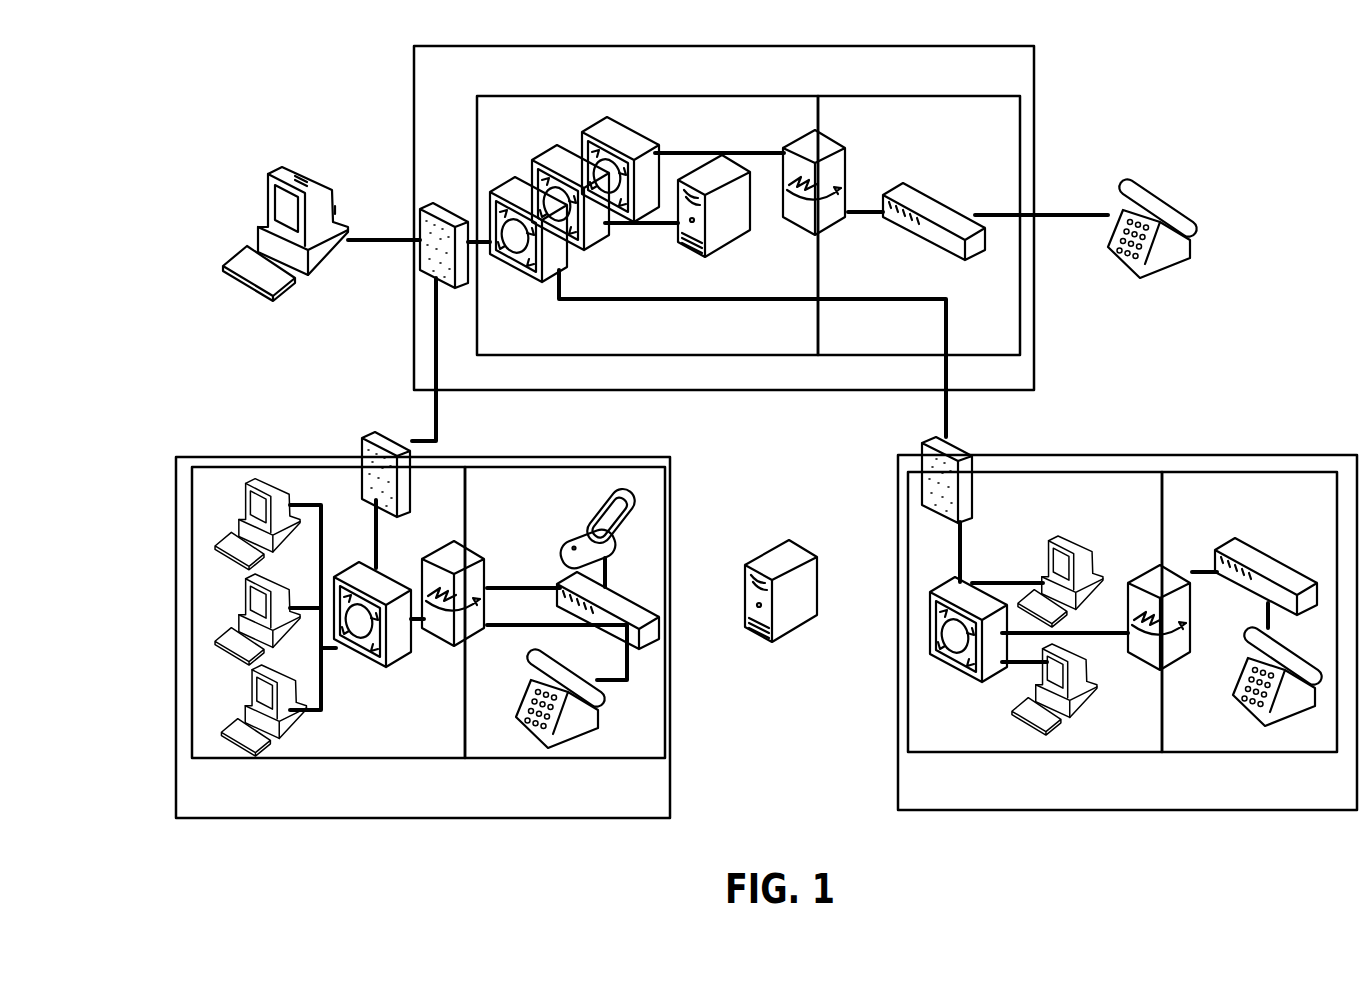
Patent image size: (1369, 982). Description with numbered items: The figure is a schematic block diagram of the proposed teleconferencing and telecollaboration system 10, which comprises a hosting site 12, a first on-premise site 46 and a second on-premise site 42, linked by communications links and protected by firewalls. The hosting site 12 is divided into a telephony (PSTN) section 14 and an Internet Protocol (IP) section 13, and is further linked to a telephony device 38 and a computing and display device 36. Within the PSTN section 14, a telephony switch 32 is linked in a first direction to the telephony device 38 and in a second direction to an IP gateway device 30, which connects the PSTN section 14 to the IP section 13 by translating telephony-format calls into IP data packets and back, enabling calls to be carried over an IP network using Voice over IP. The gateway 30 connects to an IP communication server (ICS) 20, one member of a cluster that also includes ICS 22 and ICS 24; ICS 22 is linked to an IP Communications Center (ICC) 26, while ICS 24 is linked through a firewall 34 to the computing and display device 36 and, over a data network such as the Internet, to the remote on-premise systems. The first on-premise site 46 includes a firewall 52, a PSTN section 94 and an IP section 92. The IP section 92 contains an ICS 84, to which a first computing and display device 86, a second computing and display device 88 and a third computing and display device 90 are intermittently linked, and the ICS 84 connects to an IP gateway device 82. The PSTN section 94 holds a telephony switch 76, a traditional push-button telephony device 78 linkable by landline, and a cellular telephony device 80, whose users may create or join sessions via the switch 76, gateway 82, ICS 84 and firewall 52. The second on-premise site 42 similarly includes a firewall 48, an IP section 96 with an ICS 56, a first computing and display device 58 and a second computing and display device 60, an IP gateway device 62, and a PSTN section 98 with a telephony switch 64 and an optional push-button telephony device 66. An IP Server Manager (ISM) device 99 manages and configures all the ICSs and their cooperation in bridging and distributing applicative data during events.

The teleconferencing and telecollaboration system 10 is at (1182, 86).
The hosting site 12 is at (1034, 72).
The Internet Protocol (IP) section 13 is at (511, 96).
The telephony (PSTN) section 14 is at (955, 96).
The IP communication server (ICS) 20 is at (655, 150).
The IP communication server (ICS) 22 is at (583, 245).
The IP communication server (ICS) 24 is at (529, 276).
The IP Communications Center (ICC) 26 is at (678, 246).
The IP gateway device 30 is at (848, 160).
The telephony switch 32 is at (932, 196).
The firewall 34 is at (424, 204).
The computing and display device 36 is at (305, 178).
The telephony device 38 is at (1160, 192).
The second on-premise site 42 is at (1180, 453).
The first on-premise site 46 is at (512, 460).
The firewall 48 is at (961, 443).
The firewall 52 is at (388, 434).
The IP communication server (ICS) 56 is at (962, 668).
The first computing and display device 58 is at (1088, 539).
The second computing and display device 60 is at (1023, 716).
The IP gateway device 62 is at (1176, 664).
The telephony switch 64 is at (1280, 565).
The traditional push-button telephony device 66 is at (1252, 718).
The telephony switch 76 is at (623, 595).
The traditional push-button telephony device 78 is at (513, 708).
The cellular telephony device 80 is at (560, 556).
The IP gateway device 82 is at (477, 553).
The IP communication server (ICS) 84 is at (397, 668).
The first computing and display device 86 is at (240, 494).
The second computing and display device 88 is at (240, 615).
The third computing and display device 90 is at (250, 678).
The IP section 92 is at (289, 758).
The telephony (PSTN) section 94 is at (624, 758).
The IP section 96 is at (1012, 753).
The telephony (PSTN) section 98 is at (1317, 753).
The IP Server Manager (ISM) device 99 is at (805, 545).